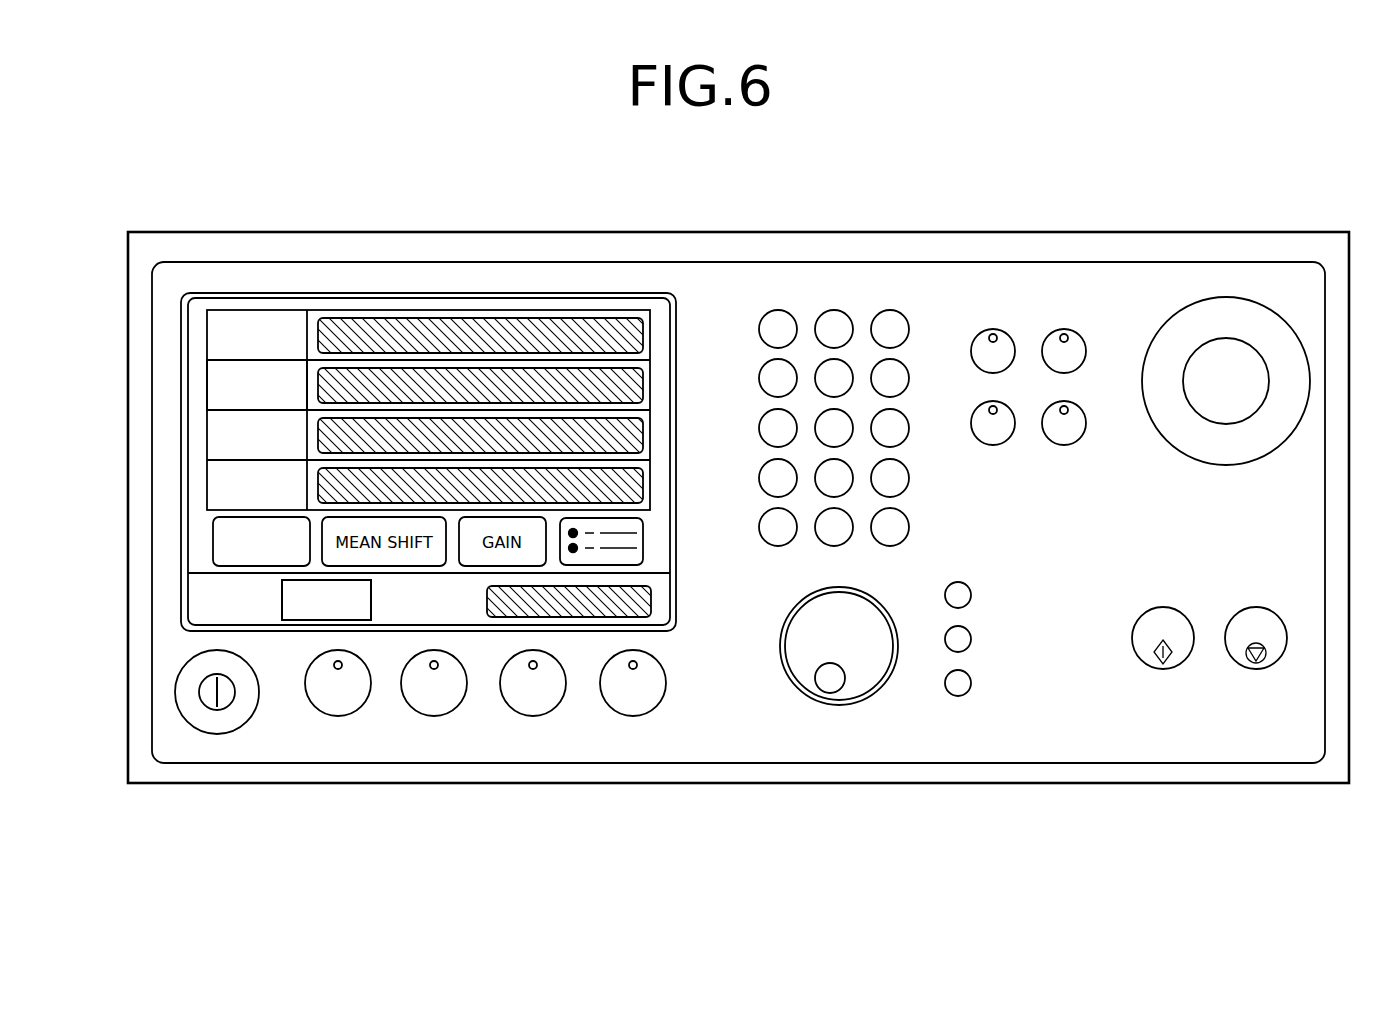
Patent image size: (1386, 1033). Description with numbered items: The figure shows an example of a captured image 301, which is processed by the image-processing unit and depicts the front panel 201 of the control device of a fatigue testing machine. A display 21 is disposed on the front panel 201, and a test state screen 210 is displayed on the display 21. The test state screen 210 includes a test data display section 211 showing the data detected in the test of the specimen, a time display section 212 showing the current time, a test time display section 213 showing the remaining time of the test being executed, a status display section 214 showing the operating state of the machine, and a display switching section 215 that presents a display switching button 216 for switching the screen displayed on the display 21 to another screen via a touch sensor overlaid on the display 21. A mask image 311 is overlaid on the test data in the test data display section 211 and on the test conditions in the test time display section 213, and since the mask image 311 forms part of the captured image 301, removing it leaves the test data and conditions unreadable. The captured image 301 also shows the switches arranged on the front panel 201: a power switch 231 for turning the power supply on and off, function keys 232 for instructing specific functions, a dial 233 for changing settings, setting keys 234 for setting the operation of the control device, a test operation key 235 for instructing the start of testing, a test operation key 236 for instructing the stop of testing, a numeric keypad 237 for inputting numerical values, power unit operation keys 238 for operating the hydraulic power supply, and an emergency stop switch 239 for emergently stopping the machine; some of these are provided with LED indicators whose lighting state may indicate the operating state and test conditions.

The captured image 301 is at (627, 232).
The front panel 201 is at (947, 262).
The display 21 is at (462, 296).
The test state screen 210 is at (357, 305).
The test data display section 211 is at (207, 385).
The mask image 311 is at (637, 480).
The display switching section 215 is at (199, 546).
The display switching button 216 is at (645, 543).
The time display section 212 is at (197, 604).
The status display section 214 is at (280, 608).
The test time display section 213 is at (489, 630).
The power switch 231 is at (218, 733).
The function keys 232 is at (294, 721).
The numeric keypad 237 is at (866, 287).
The power unit operation keys 238 is at (1032, 300).
The emergency stop switch 239 is at (1183, 372).
The dial 233 is at (839, 705).
The setting keys 234 is at (965, 716).
The test operation key 235 is at (1163, 670).
The test operation key 236 is at (1256, 670).